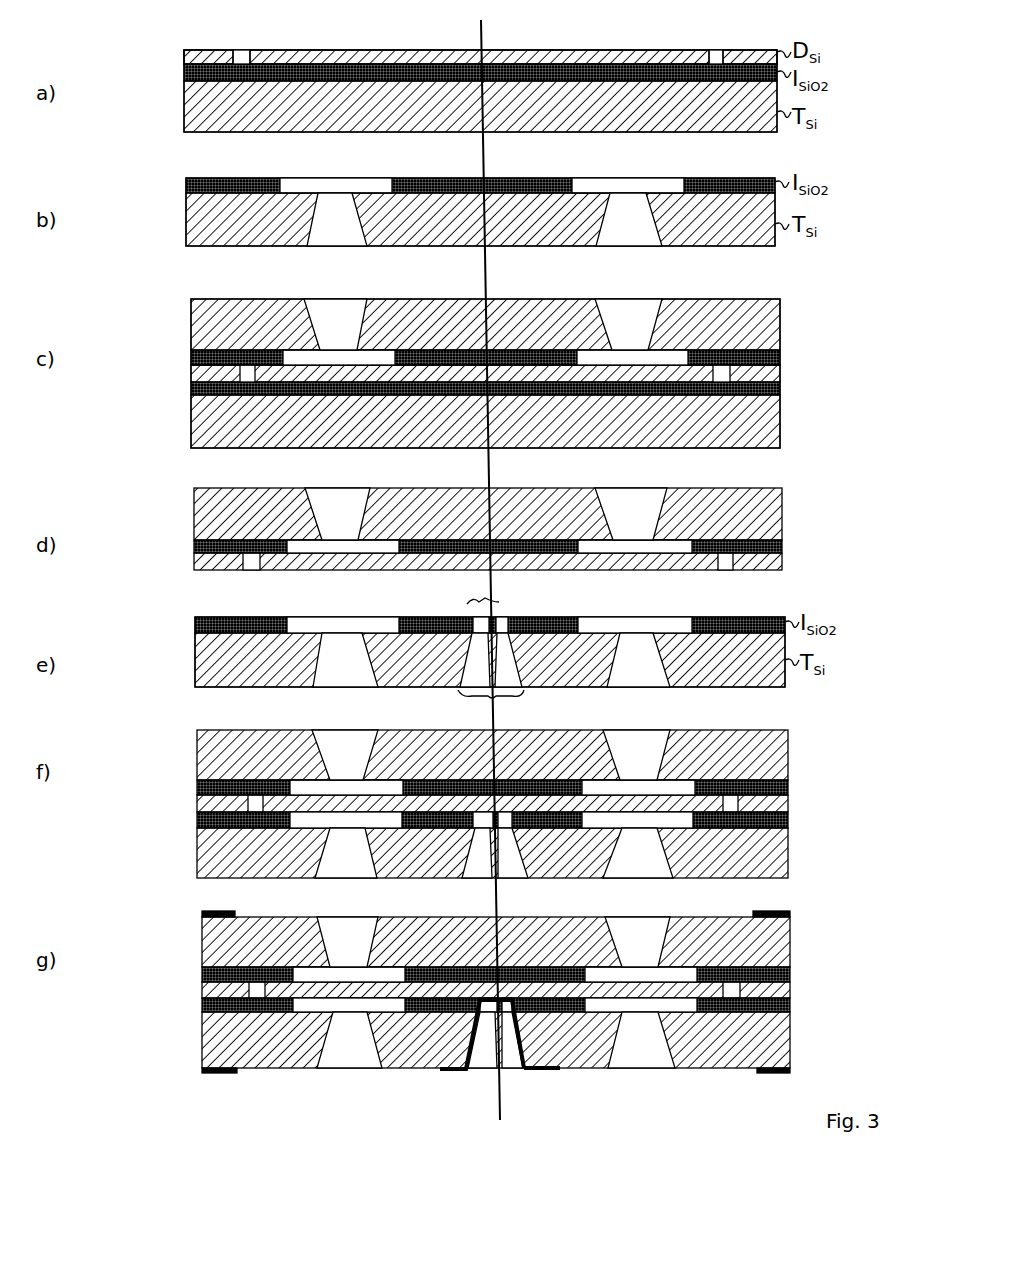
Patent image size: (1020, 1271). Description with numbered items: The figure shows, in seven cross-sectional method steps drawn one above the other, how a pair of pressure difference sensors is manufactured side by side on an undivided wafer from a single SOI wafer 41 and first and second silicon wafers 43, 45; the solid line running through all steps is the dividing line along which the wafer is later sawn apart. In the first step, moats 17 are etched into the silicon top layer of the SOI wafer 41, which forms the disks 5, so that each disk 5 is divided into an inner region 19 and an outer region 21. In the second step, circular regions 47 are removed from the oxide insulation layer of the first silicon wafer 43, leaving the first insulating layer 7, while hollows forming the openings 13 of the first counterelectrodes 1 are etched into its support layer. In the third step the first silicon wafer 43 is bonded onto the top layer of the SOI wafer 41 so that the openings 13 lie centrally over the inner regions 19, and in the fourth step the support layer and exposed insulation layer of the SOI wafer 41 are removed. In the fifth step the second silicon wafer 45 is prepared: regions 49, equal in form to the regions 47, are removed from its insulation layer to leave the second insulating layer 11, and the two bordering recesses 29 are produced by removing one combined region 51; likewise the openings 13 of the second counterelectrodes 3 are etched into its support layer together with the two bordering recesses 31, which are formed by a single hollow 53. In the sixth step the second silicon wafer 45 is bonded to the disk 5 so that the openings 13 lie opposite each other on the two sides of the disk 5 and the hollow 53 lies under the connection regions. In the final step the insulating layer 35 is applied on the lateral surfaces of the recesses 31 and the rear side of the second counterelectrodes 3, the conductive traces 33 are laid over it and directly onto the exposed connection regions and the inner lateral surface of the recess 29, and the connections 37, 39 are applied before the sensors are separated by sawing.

The first counterelectrode 1 is at (212, 250).
The second counterelectrode 3 is at (232, 687).
The disk 5 is at (169, 66).
The first insulating layer 7 is at (214, 186).
The second insulating layer 11 is at (218, 625).
The opening 13 is at (325, 237).
The moat 17 is at (244, 51).
The inner region 19 is at (329, 57).
The outer region 21 is at (222, 57).
The recess 29 is at (480, 622).
The recess 31 is at (494, 850).
The conductive trace 33 is at (527, 1072).
The insulating layer 35 is at (558, 1068).
The connection 37 is at (190, 910).
The connection 39 is at (212, 1076).
The SOI wafer 41 is at (139, 50).
The first silicon wafer 43 is at (166, 179).
The second silicon wafer 45 is at (172, 622).
The region of the insulation layer 47 is at (325, 185).
The region of the insulation layer 49 is at (336, 625).
The combined region 51 is at (477, 589).
The hollow 53 is at (484, 708).